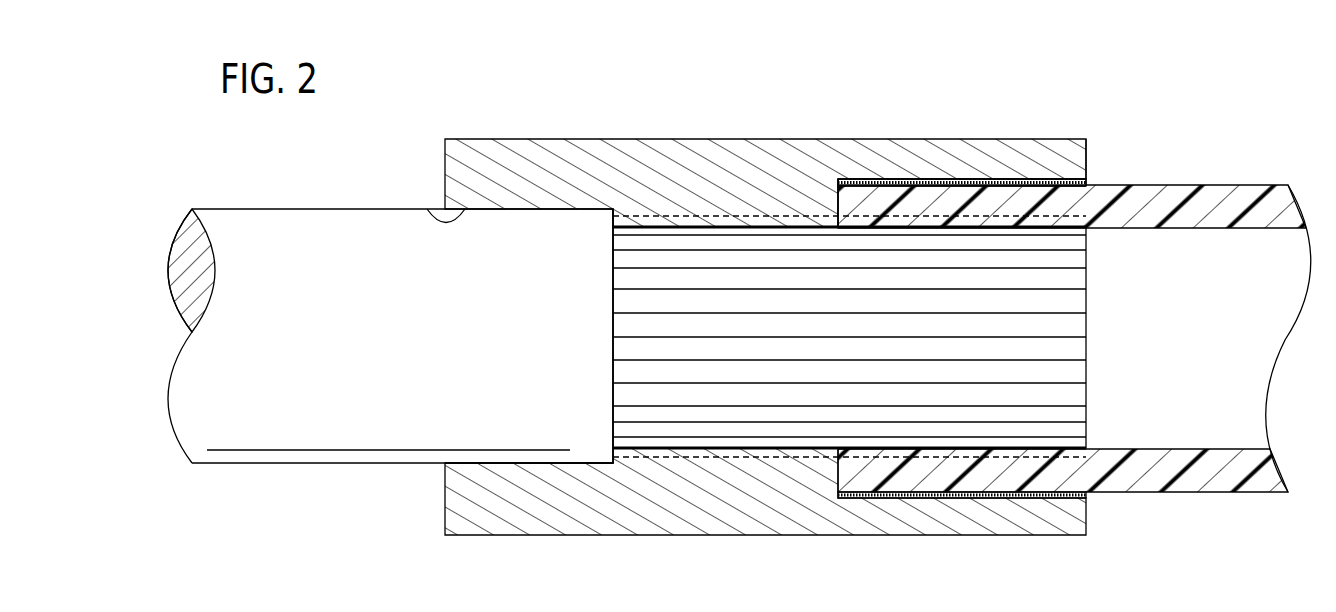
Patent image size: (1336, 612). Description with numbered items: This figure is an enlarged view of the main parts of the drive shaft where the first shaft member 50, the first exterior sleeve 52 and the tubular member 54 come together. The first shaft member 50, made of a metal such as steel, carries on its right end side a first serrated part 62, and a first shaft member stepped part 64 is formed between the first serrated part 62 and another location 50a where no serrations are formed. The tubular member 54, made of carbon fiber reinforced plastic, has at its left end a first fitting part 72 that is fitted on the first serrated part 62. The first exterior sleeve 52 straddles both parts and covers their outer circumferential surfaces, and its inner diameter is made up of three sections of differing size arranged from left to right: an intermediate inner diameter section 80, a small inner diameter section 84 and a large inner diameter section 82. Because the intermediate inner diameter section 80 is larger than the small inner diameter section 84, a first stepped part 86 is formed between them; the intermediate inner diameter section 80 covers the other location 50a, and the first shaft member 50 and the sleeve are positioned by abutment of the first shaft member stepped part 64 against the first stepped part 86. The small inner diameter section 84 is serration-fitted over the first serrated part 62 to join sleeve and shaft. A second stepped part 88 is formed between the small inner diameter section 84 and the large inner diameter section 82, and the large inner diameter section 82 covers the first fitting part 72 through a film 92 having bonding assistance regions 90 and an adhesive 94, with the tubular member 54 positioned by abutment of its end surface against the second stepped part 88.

The first shaft member 50 is at (255, 442).
The another location where serrations are not formed 50a is at (470, 465).
The first exterior sleeve 52 is at (575, 523).
The tubular member 54 is at (1181, 485).
The first serrated part 62 is at (752, 417).
The first shaft member stepped part 64 is at (617, 452).
The first fitting part 72 is at (926, 508).
The intermediate inner diameter section 80 is at (432, 214).
The large inner diameter section 82 is at (1073, 182).
The small inner diameter section 84 is at (762, 230).
The first stepped part 86 is at (612, 221).
The second stepped part 88 is at (840, 190).
The bonding assistance regions 90 is at (962, 131).
The film 92 is at (977, 180).
The adhesive 94 is at (947, 183).